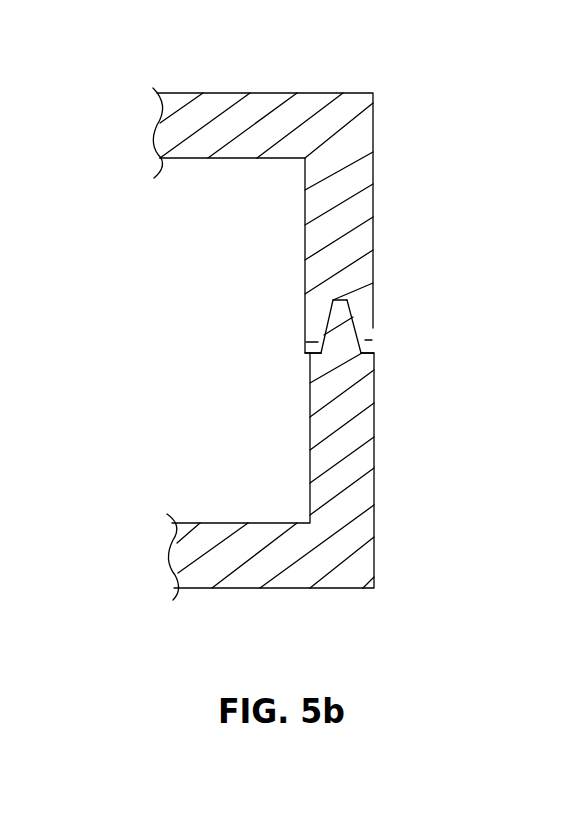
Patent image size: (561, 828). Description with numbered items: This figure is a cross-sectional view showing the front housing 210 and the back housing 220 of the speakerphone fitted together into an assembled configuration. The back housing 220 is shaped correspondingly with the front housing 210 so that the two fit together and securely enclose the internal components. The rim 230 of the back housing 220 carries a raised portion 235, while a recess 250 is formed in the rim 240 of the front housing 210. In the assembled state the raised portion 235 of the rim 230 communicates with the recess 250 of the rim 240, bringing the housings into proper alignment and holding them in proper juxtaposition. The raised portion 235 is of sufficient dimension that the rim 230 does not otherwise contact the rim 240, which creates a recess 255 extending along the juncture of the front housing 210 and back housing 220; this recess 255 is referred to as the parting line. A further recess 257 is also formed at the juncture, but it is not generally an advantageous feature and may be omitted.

The front housing 210 is at (373, 158).
The back housing 220 is at (375, 558).
The rim 230 is at (318, 352).
The raised portion 235 is at (365, 350).
The rim 240 is at (365, 333).
The recess 250 is at (318, 337).
The recess (parting line) 255 is at (365, 340).
The recess 257 is at (318, 342).